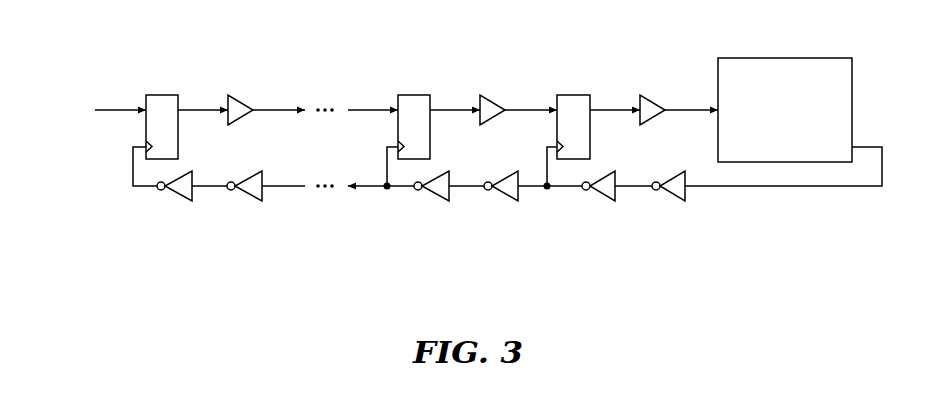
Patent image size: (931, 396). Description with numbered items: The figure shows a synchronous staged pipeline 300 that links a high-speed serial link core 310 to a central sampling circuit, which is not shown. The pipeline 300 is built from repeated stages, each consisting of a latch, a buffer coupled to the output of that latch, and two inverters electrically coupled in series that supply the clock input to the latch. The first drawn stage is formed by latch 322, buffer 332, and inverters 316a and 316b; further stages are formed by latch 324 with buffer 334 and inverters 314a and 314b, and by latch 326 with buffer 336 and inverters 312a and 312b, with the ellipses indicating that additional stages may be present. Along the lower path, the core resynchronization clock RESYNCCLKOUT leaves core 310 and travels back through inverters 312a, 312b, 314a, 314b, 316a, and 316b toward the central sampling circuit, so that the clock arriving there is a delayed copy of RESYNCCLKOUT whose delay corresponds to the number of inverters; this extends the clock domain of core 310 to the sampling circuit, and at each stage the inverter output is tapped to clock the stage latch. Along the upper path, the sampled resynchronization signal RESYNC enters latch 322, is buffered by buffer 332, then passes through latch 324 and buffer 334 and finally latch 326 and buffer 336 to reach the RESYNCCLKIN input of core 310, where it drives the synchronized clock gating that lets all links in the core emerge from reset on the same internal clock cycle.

The synchronous staged pipeline 300 is at (78, 32).
The core 310 is at (840, 60).
The inverter 312a is at (678, 195).
The inverter 312b is at (608, 195).
The inverter 314a is at (512, 195).
The inverter 314b is at (440, 195).
The inverter 316a is at (252, 195).
The inverter 316b is at (182, 195).
The latch 322 is at (170, 97).
The latch 324 is at (421, 97).
The latch 326 is at (582, 97).
The buffer 332 is at (235, 97).
The buffer 334 is at (487, 97).
The buffer 336 is at (647, 97).